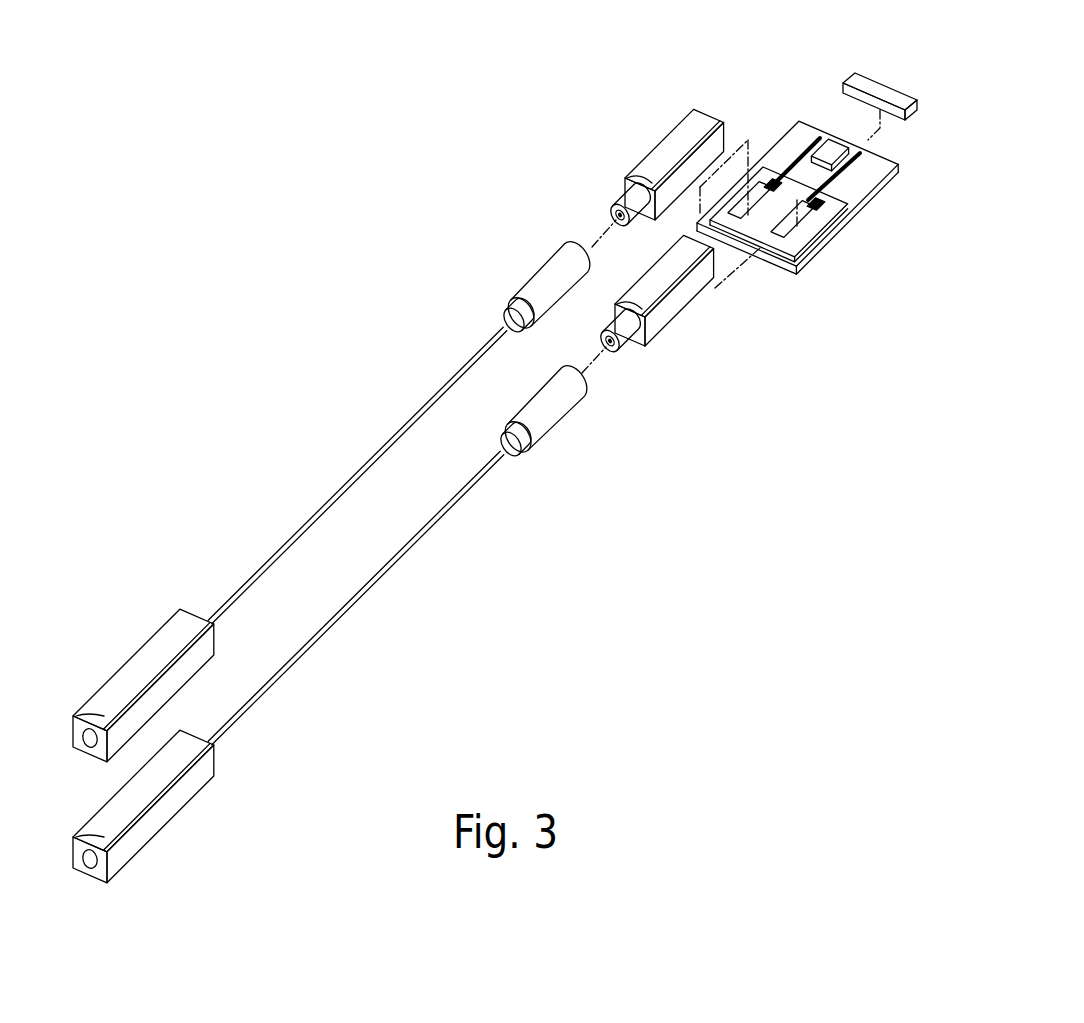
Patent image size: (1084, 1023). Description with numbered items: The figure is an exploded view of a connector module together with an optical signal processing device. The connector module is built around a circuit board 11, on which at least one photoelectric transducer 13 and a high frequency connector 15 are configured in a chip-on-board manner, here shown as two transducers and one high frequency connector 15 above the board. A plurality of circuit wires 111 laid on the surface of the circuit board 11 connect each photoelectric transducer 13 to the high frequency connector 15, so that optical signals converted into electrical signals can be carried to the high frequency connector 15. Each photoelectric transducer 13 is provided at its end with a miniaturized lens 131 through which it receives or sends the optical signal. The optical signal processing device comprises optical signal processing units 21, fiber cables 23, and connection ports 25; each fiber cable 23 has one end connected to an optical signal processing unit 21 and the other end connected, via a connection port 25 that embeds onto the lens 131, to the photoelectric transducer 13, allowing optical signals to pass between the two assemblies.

The circuit board 11 is at (827, 235).
The circuit wires 111 is at (852, 165).
The photoelectric transducer 13 is at (698, 128).
The lens 131 is at (618, 198).
The high frequency connector 15 is at (867, 87).
The optical signal processing unit 21 is at (160, 655).
The fiber cable 23 is at (347, 476).
The connection port 25 is at (545, 290).